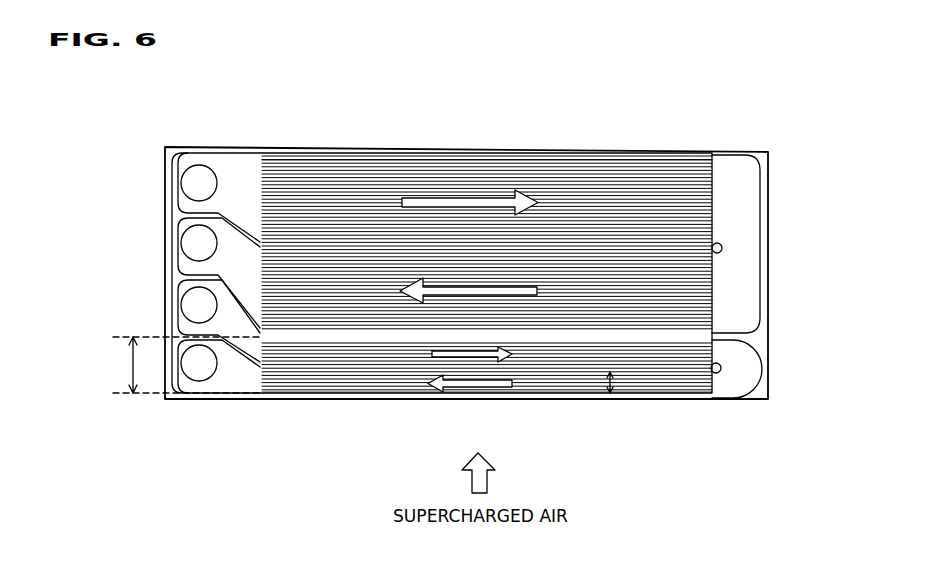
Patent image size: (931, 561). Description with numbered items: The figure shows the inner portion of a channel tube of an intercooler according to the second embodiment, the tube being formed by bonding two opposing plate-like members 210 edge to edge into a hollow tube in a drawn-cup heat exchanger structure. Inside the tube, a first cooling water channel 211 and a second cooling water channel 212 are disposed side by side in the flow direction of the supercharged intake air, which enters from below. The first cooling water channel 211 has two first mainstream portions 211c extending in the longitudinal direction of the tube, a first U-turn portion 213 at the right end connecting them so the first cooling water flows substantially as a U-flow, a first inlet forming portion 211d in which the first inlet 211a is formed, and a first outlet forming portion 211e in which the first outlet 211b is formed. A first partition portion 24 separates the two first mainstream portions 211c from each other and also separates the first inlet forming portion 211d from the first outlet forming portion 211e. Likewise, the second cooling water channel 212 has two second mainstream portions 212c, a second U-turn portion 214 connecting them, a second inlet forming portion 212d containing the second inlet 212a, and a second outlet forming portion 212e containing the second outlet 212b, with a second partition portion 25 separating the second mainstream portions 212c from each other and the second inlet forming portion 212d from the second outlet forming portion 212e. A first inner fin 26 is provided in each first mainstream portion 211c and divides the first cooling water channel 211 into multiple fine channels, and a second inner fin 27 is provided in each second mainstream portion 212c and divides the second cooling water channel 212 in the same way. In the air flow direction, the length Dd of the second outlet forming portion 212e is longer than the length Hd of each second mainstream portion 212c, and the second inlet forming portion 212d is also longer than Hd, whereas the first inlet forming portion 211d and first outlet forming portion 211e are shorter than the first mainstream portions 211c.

The plate-like member 210 is at (580, 150).
The first cooling water channel 211 is at (370, 184).
The first inlet 211a is at (195, 162).
The first outlet 211b is at (180, 226).
The first mainstream portion 211c is at (418, 182).
The first inlet forming portion 211d is at (218, 160).
The first outlet forming portion 211e is at (180, 258).
The second cooling water channel 212 is at (348, 385).
The second inlet 212a is at (183, 313).
The second outlet 212b is at (197, 385).
The second mainstream portion 212c is at (400, 390).
The second inlet forming portion 212d is at (183, 283).
The second outlet forming portion 212e is at (220, 385).
The first U-turn portion 213 is at (733, 218).
The second U-turn portion 214 is at (738, 368).
The first partition portion 24 is at (633, 245).
The second partition portion 25 is at (677, 373).
The first inner fin 26 is at (491, 182).
The second inner fin 27 is at (577, 392).
The length of second mainstream portion Hd is at (612, 385).
The length of second outlet forming portion Dd is at (179, 365).